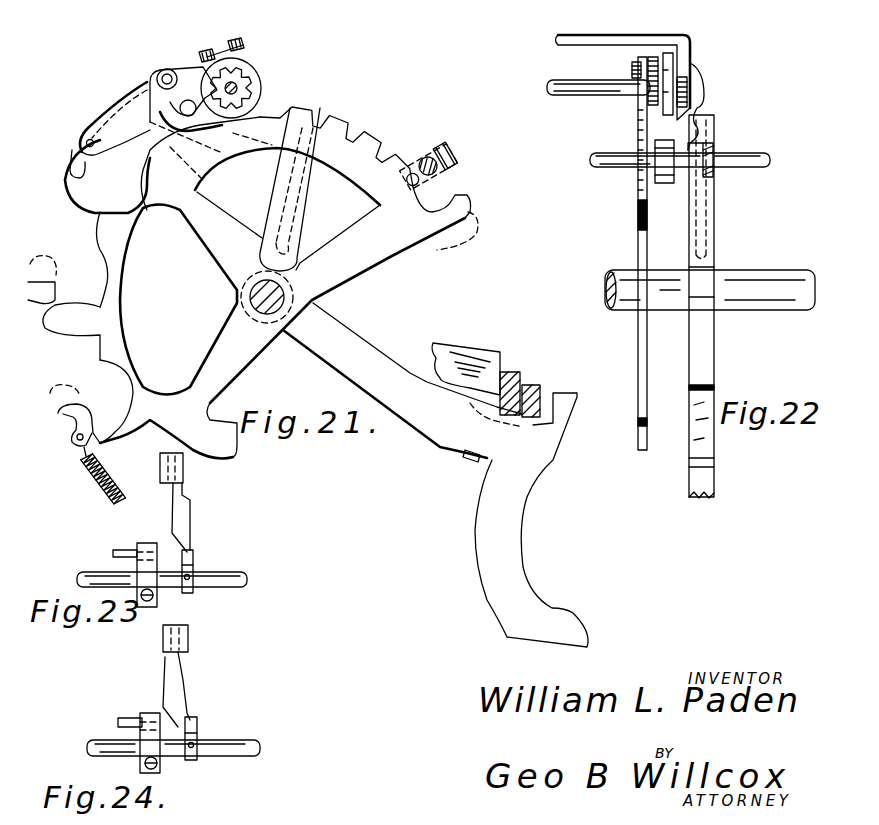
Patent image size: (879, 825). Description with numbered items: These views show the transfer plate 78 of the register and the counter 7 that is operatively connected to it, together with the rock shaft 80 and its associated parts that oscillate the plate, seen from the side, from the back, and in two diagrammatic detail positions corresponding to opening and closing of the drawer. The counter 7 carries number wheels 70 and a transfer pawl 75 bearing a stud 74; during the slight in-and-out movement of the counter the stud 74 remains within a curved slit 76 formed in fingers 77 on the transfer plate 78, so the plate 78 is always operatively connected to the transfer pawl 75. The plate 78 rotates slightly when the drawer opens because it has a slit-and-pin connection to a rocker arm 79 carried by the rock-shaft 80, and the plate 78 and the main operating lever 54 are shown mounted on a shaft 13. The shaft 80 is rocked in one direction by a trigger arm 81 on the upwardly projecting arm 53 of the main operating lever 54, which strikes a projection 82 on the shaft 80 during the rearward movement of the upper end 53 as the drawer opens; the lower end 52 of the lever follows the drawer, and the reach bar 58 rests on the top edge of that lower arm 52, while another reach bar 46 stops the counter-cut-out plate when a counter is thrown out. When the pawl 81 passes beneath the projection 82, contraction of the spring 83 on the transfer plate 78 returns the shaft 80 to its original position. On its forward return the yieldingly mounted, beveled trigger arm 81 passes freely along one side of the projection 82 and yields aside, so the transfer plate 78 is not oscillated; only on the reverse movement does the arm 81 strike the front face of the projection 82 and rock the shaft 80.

In FIG. 21, the counter 7 is at (243, 45).
In FIG. 21, the shaft 13 is at (288, 297).
In FIG. 22, the shaft 13 is at (740, 280).
In FIG. 21, the reach bar 46 is at (517, 370).
In FIG. 21, the lower end of main operating lever 52 is at (556, 620).
In FIG. 21, the upper end of main operating lever 53 is at (162, 165).
In FIG. 22, the upper end of main operating lever 53 is at (704, 178).
In FIG. 23, the upper end of main operating lever 53 is at (160, 462).
In FIG. 24, the upper end of main operating lever 53 is at (190, 643).
In FIG. 21, the main operating lever 54 is at (340, 333).
In FIG. 22, the main operating lever 54 is at (716, 358).
In FIG. 21, the reach bar 58 is at (538, 385).
In FIG. 21, the number wheel 70 is at (261, 86).
In FIG. 21, the stud 74 is at (166, 68).
In FIG. 22, the stud 74 is at (632, 70).
In FIG. 21, the transfer pawl 75 is at (185, 66).
In FIG. 22, the transfer pawl 75 is at (652, 60).
In FIG. 21, the curved slit 76 is at (160, 72).
In FIG. 21, the fingers 77 is at (147, 86).
In FIG. 21, the transfer plate 78 is at (253, 282).
In FIG. 22, the transfer plate 78 is at (639, 236).
In FIG. 21, the rocker arm 79 is at (413, 163).
In FIG. 22, the rocker arm 79 is at (664, 184).
In FIG. 23, the rocker arm 79 is at (148, 528).
In FIG. 24, the rocker arm 79 is at (147, 716).
In FIG. 21, the rock-shaft 80 is at (448, 172).
In FIG. 22, the rock-shaft 80 is at (765, 156).
In FIG. 23, the rock-shaft 80 is at (110, 576).
In FIG. 24, the rock-shaft 80 is at (245, 740).
In FIG. 21, the trigger arm 81 is at (310, 118).
In FIG. 22, the trigger arm 81 is at (706, 118).
In FIG. 23, the trigger arm 81 is at (188, 512).
In FIG. 24, the trigger arm 81 is at (182, 692).
In FIG. 21, the projection 82 is at (431, 150).
In FIG. 22, the projection 82 is at (714, 152).
In FIG. 23, the projection 82 is at (193, 561).
In FIG. 24, the projection 82 is at (196, 719).
In FIG. 23, the spring 83 is at (96, 472).